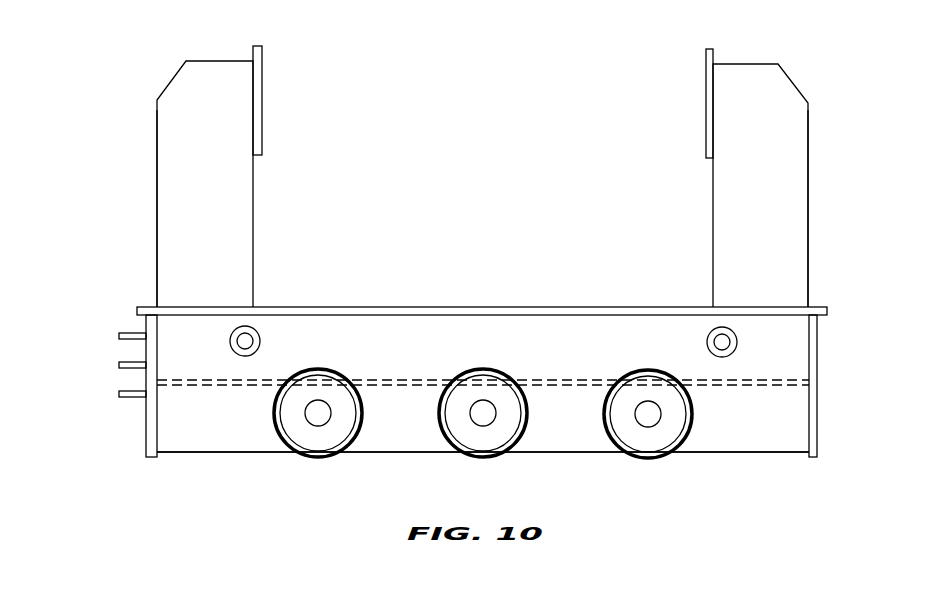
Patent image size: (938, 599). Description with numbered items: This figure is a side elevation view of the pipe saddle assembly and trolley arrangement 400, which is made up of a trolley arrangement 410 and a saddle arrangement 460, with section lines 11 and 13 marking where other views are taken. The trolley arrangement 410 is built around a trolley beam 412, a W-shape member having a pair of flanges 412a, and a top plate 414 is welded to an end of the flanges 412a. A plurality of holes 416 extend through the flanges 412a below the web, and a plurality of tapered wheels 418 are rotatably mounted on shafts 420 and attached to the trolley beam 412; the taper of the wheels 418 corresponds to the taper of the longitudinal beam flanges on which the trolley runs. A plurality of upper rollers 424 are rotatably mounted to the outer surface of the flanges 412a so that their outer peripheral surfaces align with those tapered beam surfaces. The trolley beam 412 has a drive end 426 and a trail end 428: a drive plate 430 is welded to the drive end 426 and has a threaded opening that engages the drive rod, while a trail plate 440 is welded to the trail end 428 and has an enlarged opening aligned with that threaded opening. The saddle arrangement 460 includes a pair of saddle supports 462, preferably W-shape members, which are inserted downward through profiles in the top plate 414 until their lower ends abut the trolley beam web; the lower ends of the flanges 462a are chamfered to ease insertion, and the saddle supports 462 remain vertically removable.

The section line 11- 11 is at (113, 0).
The section line 13- 13 is at (808, 83).
The pipe saddle assembly and trolley arrangement 400 is at (550, 54).
The trolley arrangement 410 is at (854, 337).
The trolley beam 412 is at (188, 433).
The flanges 412a is at (740, 432).
The top plate 414 is at (523, 307).
The holes 416 is at (483, 413).
The tapered wheels 418 is at (338, 447).
The shafts 420 is at (483, 413).
The upper rollers 424 is at (736, 343).
The drive end 426 is at (160, 430).
The trail end 428 is at (803, 427).
The drive plate 430 is at (144, 420).
The trail plate 440 is at (818, 386).
The saddle arrangement 460 is at (155, 157).
The saddle supports 462 is at (157, 218).
The flanges 462a is at (810, 147).